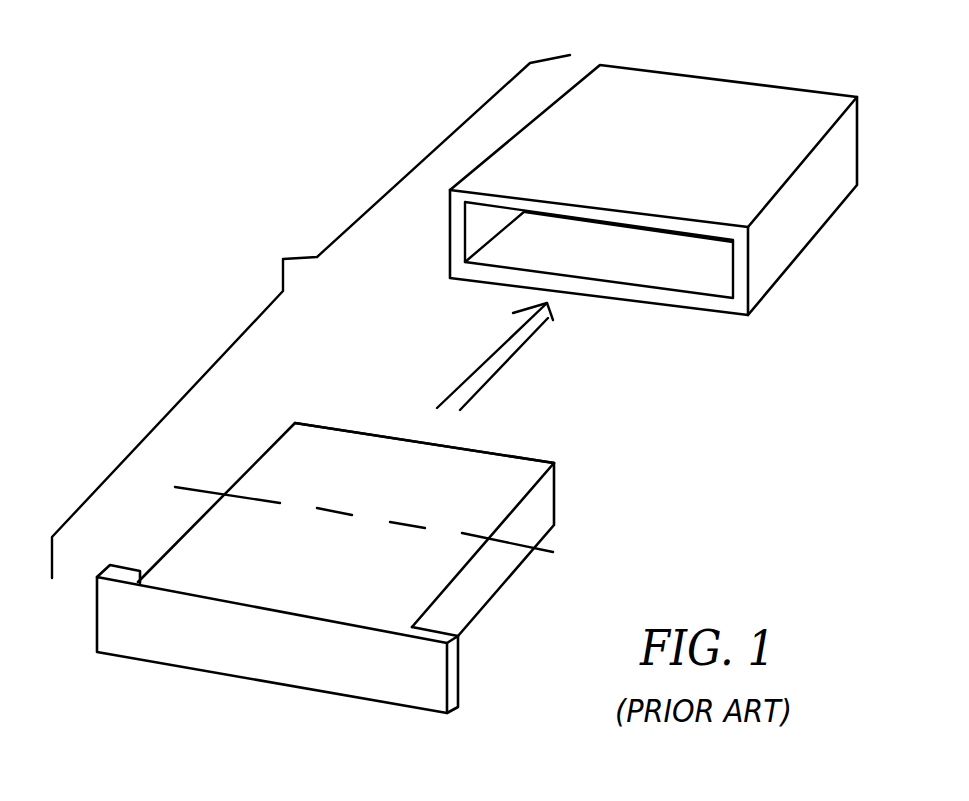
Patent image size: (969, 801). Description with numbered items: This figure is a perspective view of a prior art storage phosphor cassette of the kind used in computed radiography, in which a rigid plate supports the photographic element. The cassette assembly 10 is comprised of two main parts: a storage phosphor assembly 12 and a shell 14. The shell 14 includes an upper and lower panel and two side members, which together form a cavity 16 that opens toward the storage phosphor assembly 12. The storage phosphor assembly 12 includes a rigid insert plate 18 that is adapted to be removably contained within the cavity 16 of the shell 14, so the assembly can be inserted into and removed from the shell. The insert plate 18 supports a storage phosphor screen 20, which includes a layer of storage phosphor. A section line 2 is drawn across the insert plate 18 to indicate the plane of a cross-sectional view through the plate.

The prior art electronic assembly 10 is at (311, 316).
The carrier tray 12 is at (176, 680).
The housing 14 is at (736, 65).
The housing opening 16 is at (655, 265).
The circuit board 18 is at (540, 510).
The top surface of circuit board 20 is at (490, 463).
The section line 2- 2 is at (202, 472).